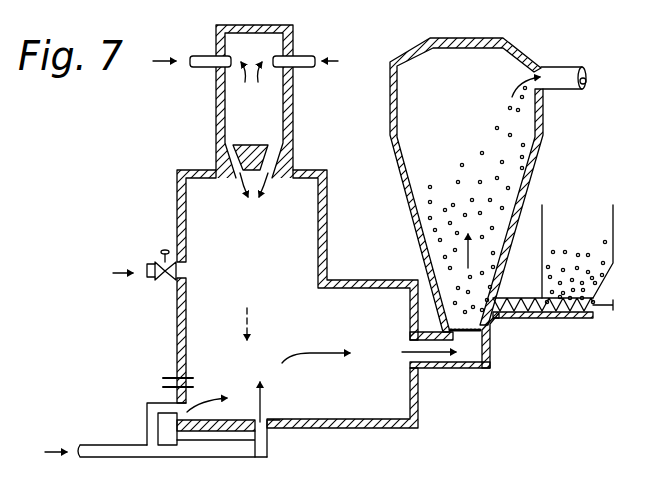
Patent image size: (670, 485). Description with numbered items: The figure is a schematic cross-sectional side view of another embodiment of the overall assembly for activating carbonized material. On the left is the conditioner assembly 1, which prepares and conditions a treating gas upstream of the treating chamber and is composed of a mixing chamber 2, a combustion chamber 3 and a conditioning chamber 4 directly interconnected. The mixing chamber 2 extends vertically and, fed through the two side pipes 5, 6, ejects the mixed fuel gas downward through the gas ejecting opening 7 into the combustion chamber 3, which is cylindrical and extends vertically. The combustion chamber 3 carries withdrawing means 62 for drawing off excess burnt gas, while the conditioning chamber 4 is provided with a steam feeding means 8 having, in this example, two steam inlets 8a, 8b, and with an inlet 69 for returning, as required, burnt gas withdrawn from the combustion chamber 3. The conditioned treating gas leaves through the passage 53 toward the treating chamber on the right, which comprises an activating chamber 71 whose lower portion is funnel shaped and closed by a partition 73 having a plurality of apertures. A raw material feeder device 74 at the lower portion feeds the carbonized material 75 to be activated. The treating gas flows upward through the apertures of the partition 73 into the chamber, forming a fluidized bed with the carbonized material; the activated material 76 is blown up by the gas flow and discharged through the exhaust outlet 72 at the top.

The conditioner assembly 1 is at (141, 202).
The mixing chamber 2 is at (230, 103).
The combustion chamber 3 is at (297, 313).
The conditioning chamber 4 is at (313, 343).
The inlet pipe 5 is at (205, 55).
The inlet pipe 6 is at (305, 55).
The gas ejecting opening 7 is at (249, 190).
The steam feeding means 8 is at (124, 458).
The steam inlet 8a is at (173, 417).
The steam inlet 8b is at (266, 437).
The passage 53 is at (433, 355).
The withdrawing means 62 is at (157, 262).
The inlet 69 is at (168, 389).
The activating chamber 71 is at (461, 56).
The exhaust outlet 72 is at (557, 88).
The partition 73 is at (483, 338).
The raw material feeder device 74 is at (552, 313).
The carbonized material 75 is at (602, 277).
The activated material 76 is at (512, 189).